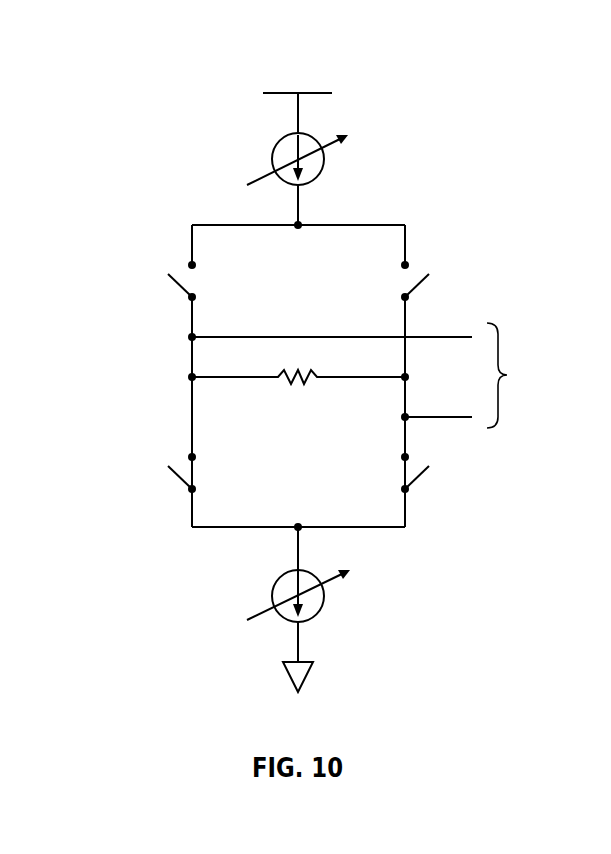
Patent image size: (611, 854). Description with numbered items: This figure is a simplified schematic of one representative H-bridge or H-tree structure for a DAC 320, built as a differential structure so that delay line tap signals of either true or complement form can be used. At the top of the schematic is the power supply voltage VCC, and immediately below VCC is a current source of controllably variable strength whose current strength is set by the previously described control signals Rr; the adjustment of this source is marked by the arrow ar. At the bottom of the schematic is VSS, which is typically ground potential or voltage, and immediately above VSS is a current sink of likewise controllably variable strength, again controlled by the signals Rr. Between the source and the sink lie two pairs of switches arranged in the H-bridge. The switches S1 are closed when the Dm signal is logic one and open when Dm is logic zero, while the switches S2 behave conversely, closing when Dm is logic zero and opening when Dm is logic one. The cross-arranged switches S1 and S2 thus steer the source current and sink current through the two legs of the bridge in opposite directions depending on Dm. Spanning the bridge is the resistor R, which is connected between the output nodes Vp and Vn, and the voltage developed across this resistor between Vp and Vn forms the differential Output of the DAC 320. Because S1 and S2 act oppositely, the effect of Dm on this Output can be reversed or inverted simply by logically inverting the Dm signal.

The DAC 320 is at (197, 55).
The power supply voltage VCC is at (297, 97).
The control signals Rr is at (258, 611).
The current source adjustment arrow ar is at (301, 379).
The switches S1 is at (181, 285).
The switches S2 is at (181, 477).
The output node Vp is at (311, 336).
The output node Vn is at (417, 416).
The resistor R is at (280, 379).
The differential output Output is at (542, 375).
The ground potential VSS is at (330, 677).